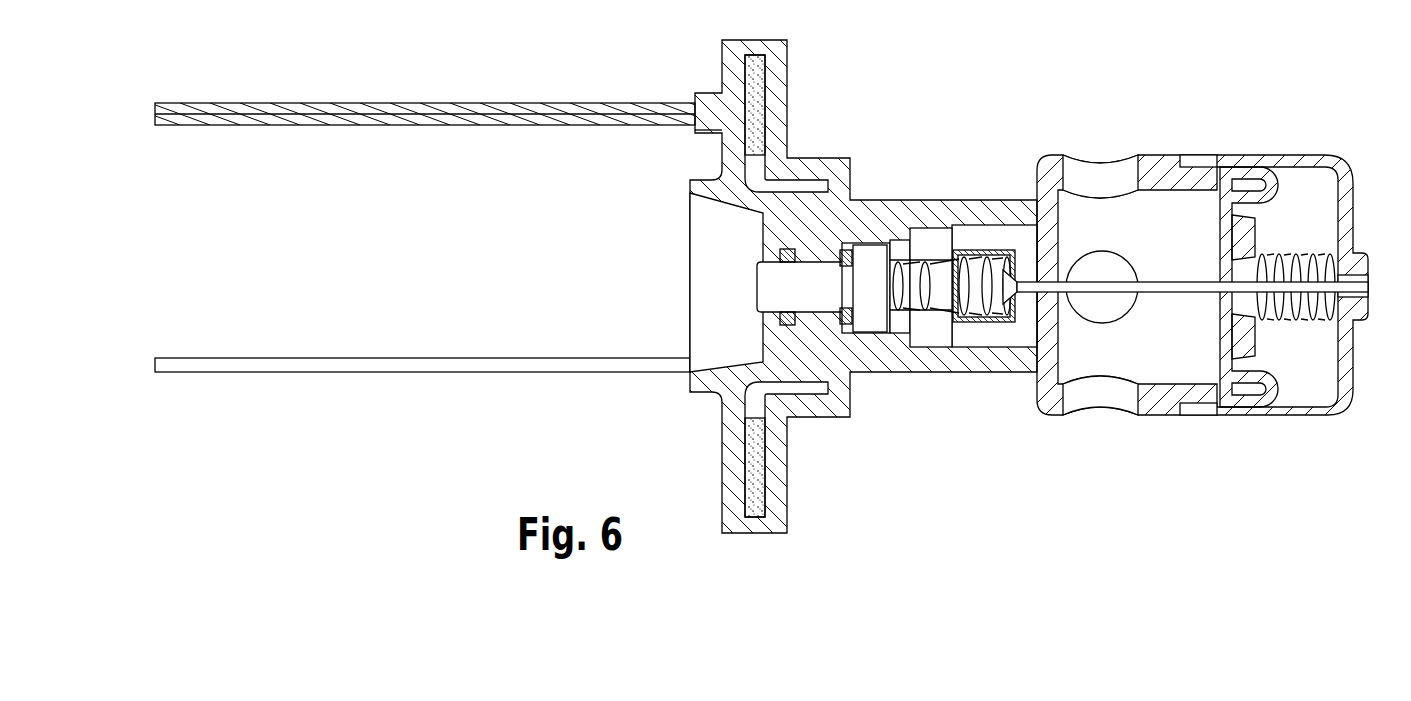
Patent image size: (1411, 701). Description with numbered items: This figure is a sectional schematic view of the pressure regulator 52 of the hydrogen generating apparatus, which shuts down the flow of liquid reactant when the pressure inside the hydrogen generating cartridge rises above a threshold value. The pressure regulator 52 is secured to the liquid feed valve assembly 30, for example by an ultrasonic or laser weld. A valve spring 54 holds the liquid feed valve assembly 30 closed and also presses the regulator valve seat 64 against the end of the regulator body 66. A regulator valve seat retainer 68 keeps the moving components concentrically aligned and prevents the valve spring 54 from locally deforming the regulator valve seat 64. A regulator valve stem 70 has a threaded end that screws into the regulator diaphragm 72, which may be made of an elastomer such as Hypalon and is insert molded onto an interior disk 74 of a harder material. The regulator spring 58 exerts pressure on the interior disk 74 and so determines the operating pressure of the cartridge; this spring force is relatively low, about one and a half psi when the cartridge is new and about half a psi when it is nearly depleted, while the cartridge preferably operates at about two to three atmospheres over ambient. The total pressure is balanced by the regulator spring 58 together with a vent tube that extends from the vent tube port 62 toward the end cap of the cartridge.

The liquid feed valve assembly 30 is at (722, 456).
The pressure regulator 52 is at (1190, 272).
The valve spring 54 is at (926, 347).
The regulator spring 58 is at (1298, 322).
The vent tube port 62 is at (1372, 312).
The regulator valve seat 64 is at (1018, 323).
The regulator body 66 is at (1043, 158).
The regulator valve seat retainer 68 is at (973, 323).
The regulator valve stem 70 is at (1103, 290).
The regulator diaphragm 72 is at (1282, 180).
The interior disk 74 is at (1270, 225).